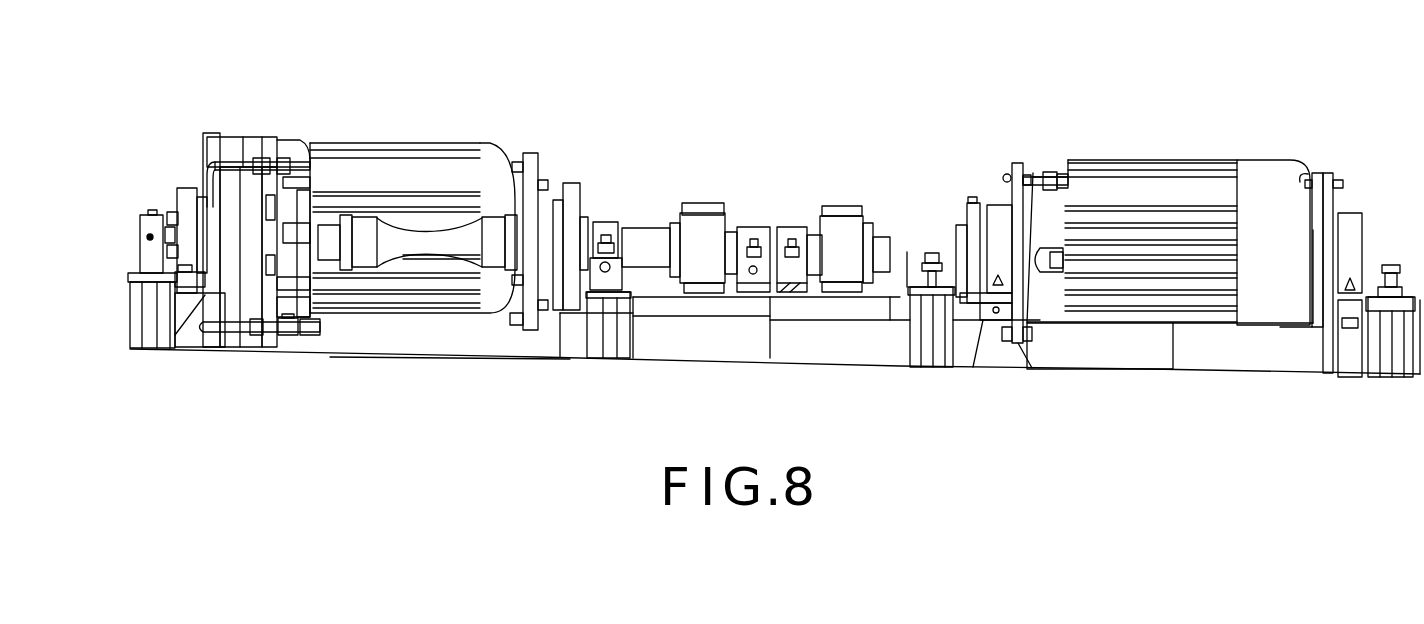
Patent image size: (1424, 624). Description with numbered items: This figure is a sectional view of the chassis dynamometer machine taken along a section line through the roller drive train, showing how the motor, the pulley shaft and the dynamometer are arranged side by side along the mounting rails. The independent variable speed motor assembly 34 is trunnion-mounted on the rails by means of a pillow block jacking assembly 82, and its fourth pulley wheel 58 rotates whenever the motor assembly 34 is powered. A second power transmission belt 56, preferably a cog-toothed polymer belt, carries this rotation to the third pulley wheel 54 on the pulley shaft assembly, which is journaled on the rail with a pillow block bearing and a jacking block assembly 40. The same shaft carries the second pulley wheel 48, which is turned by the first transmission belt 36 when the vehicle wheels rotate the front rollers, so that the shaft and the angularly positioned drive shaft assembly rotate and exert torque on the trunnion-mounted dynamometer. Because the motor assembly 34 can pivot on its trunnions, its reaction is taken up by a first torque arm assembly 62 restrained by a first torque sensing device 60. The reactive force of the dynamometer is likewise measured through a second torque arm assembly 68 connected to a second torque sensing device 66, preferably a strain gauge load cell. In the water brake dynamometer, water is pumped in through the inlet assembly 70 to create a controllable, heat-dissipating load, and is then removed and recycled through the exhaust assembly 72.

The motor assembly 34 is at (400, 155).
The first transmission belt 36 is at (700, 200).
The jacking block assembly 40 is at (760, 220).
The second pulley wheel 48 is at (683, 213).
The third pulley wheel 54 is at (588, 186).
The second power transmission belt 56 is at (966, 200).
The fourth pulley wheel 58 is at (957, 237).
The first torque sensing device 60 is at (1020, 340).
The first torque arm assembly 62 is at (1005, 180).
The second torque sensing device 66 is at (288, 160).
The second torque arm assembly 68 is at (282, 334).
The inlet assembly 70 is at (308, 135).
The exhaust assembly 72 is at (210, 334).
The pillow block jacking assembly 82 is at (985, 320).